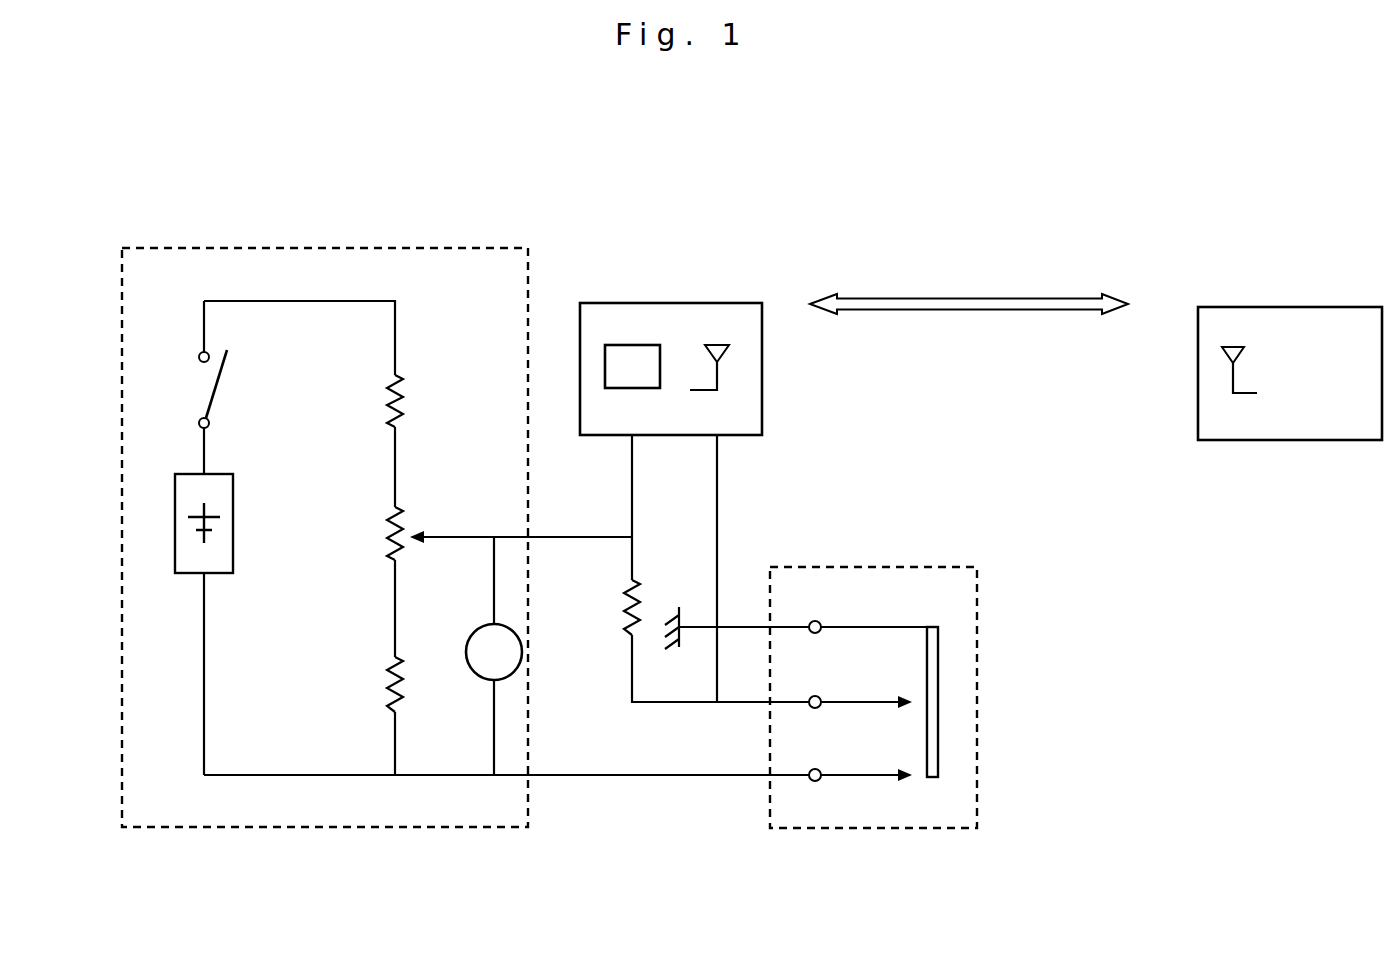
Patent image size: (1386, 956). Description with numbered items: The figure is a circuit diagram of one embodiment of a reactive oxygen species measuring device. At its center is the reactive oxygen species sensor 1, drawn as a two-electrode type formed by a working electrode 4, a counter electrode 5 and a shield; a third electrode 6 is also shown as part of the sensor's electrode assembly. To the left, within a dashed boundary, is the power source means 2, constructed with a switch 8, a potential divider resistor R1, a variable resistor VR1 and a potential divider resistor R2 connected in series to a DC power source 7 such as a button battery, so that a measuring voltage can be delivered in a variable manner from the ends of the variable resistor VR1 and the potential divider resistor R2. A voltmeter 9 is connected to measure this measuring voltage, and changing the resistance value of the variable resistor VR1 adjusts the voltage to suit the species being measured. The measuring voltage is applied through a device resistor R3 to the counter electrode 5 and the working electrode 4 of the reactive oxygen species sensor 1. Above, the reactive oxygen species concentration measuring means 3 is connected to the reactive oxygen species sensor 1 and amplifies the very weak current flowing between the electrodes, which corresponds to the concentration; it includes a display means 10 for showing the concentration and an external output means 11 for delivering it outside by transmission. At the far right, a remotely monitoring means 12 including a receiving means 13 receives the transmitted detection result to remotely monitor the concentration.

The reactive oxygen species sensor 1 is at (978, 740).
The power source means 2 is at (324, 828).
The reactive oxygen species concentration measuring means 3 is at (748, 366).
The working electrode 4 is at (866, 778).
The counter electrode 5 is at (866, 700).
The electrode 6 is at (938, 660).
The DC power source 7 is at (175, 525).
The switch 8 is at (213, 390).
The voltmeter 9 is at (470, 670).
The display means 10 is at (632, 345).
The external output means 11 is at (717, 345).
The remotely monitoring means 12 is at (1328, 330).
The receiving means 13 is at (1233, 347).
The potential divider resistor R1 is at (378, 402).
The variable resistor VR1 is at (378, 536).
The potential divider resistor R2 is at (378, 687).
The resistor R3 is at (618, 607).